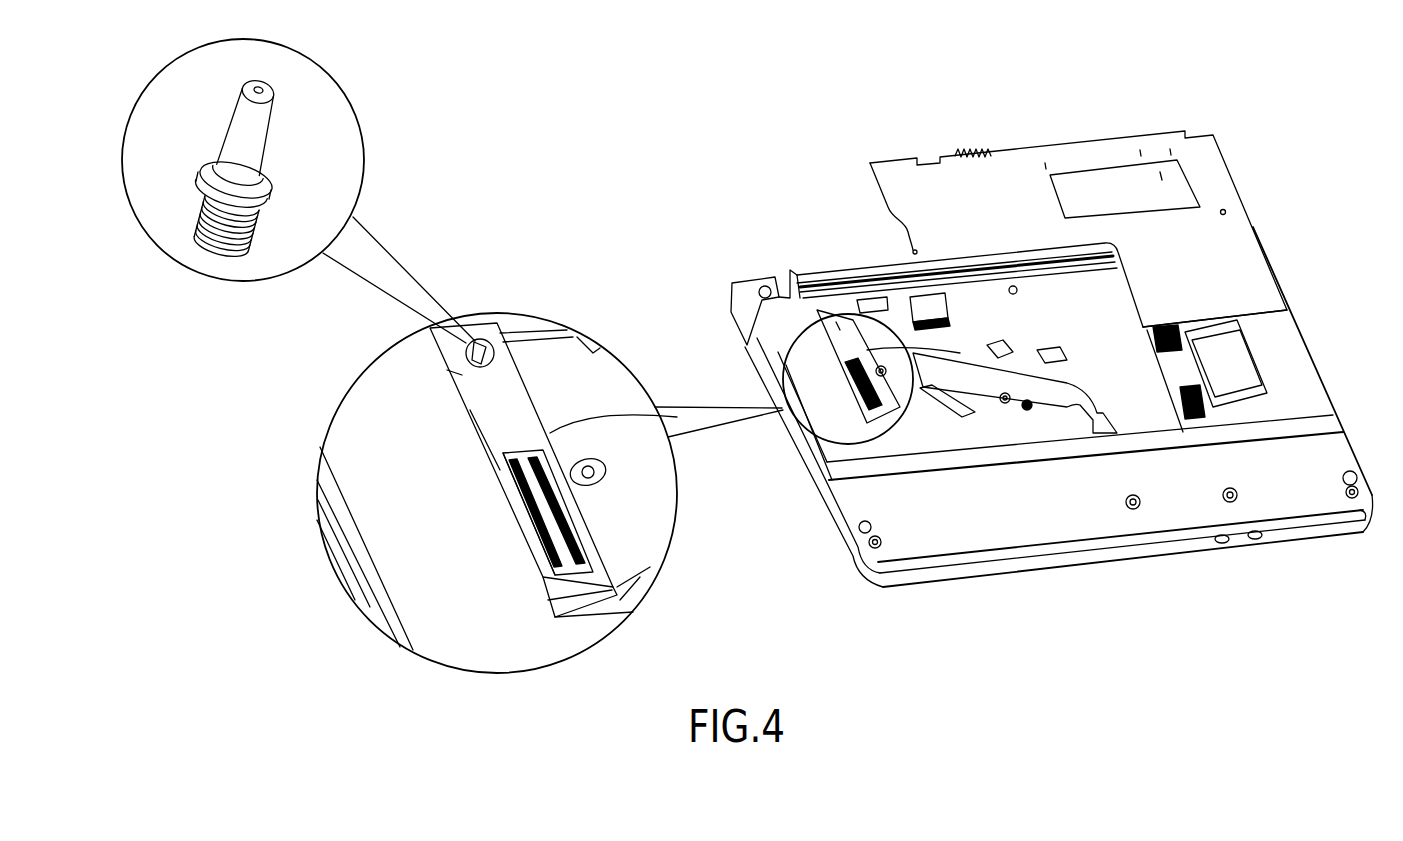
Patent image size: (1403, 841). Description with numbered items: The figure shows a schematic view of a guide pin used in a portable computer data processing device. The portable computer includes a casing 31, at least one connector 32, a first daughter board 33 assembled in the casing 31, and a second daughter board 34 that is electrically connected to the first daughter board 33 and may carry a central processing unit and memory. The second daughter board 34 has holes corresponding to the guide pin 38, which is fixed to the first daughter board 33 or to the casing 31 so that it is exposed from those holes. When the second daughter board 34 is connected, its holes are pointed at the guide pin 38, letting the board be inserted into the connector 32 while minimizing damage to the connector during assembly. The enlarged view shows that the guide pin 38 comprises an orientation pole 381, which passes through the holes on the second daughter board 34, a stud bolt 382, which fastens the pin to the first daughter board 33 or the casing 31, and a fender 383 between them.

The casing 31 is at (1272, 485).
The connector 32 is at (593, 550).
The first daughter board 33 is at (900, 410).
The second daughter board 34 is at (1203, 163).
The guide pin 38 is at (298, 221).
The orientation pole 381 is at (250, 128).
The stud bolt 382 is at (216, 248).
The fender 383 is at (265, 185).